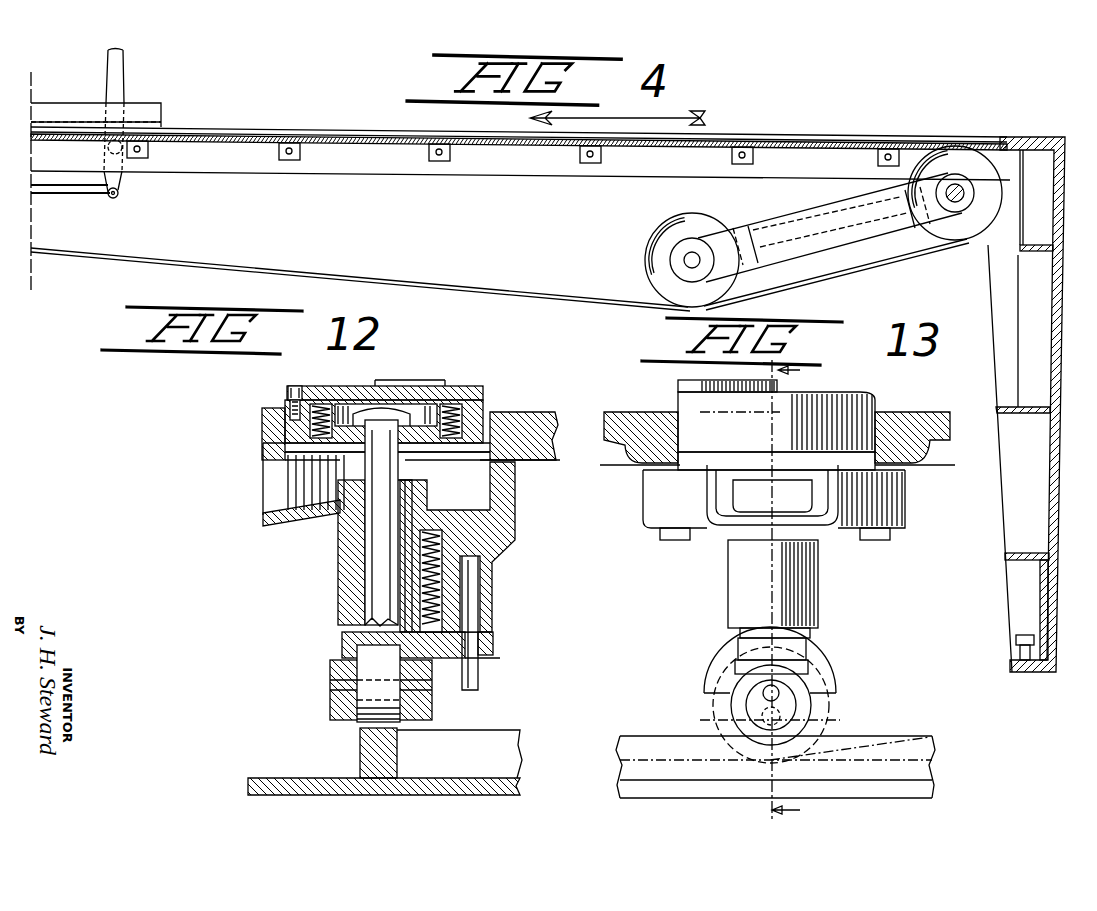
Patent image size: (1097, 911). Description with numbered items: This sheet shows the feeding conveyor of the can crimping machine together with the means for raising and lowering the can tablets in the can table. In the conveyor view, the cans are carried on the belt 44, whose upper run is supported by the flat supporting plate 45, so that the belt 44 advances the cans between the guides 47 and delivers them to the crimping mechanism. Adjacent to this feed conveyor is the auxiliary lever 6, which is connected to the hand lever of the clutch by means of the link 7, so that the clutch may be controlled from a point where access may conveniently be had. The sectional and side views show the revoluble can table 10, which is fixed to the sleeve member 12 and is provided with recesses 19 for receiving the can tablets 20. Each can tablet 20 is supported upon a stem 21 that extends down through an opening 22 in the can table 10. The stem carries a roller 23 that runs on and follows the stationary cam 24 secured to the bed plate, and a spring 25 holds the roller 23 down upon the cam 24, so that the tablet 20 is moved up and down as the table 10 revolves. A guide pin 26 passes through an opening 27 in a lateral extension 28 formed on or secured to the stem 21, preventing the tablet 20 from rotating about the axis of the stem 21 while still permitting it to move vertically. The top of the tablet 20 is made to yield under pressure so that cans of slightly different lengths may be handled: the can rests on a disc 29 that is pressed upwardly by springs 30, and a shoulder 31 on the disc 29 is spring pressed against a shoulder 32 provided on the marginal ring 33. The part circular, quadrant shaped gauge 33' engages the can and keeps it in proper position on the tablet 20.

In FIG. 4, the auxiliary lever 6 is at (124, 88).
In FIG. 4, the guides 47 is at (150, 107).
In FIG. 4, the flat supporting plate 45 is at (230, 146).
In FIG. 4, the link 7 is at (85, 197).
In FIG. 4, the belt 44 is at (187, 259).
In FIG. 12, the marginal ring 33 is at (266, 398).
In FIG. 12, the shoulder 31 is at (300, 406).
In FIG. 12, the shoulder 32 is at (302, 386).
In FIG. 12, the disc 29 is at (346, 386).
In FIG. 12, the quadrant shaped gauge 33' is at (410, 368).
In FIG. 13, the quadrant shaped gauge 33' is at (703, 376).
In FIG. 12, the springs 30 is at (453, 404).
In FIG. 12, the can tablet 20 is at (490, 406).
In FIG. 13, the can tablet 20 is at (678, 398).
In FIG. 12, the revoluble can table 10 is at (542, 412).
In FIG. 13, the revoluble can table 10 is at (918, 422).
In FIG. 12, the recesses 19 is at (478, 461).
In FIG. 13, the recesses 19 is at (690, 460).
In FIG. 12, the springs 25 is at (445, 552).
In FIG. 12, the openings 22 is at (362, 558).
In FIG. 12, the stems 21 is at (375, 583).
In FIG. 13, the stems 21 is at (792, 460).
In FIG. 12, the guide pins 26 is at (480, 606).
In FIG. 12, the openings 27 is at (494, 644).
In FIG. 12, the lateral extensions 28 is at (486, 659).
In FIG. 12, the rollers 23 is at (360, 729).
In FIG. 13, the rollers 23 is at (822, 710).
In FIG. 12, the stationary cam 24 is at (362, 753).
In FIG. 13, the stationary cam 24 is at (915, 738).
In FIG. 13, the sleeve member 12 is at (798, 591).